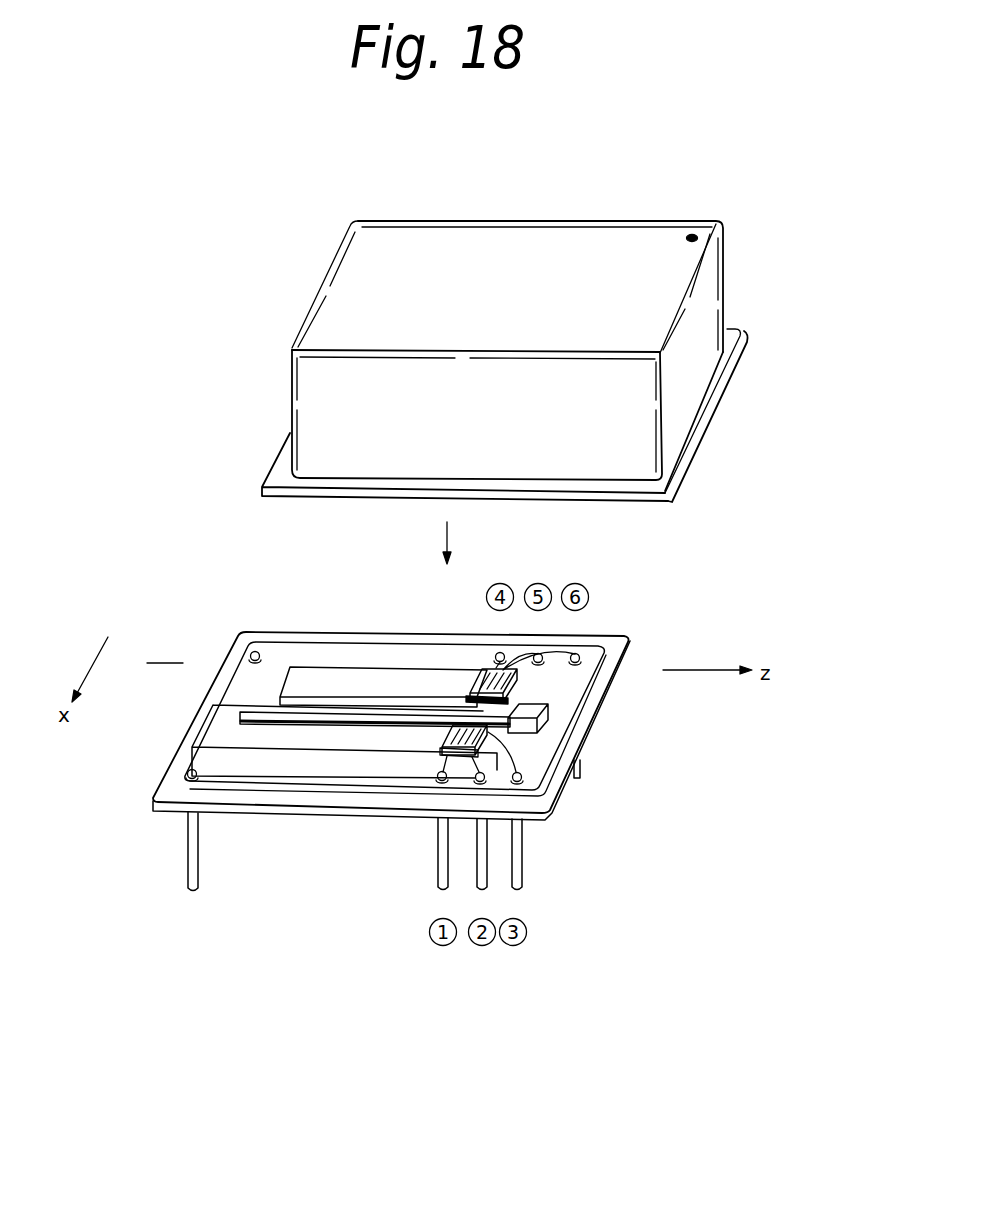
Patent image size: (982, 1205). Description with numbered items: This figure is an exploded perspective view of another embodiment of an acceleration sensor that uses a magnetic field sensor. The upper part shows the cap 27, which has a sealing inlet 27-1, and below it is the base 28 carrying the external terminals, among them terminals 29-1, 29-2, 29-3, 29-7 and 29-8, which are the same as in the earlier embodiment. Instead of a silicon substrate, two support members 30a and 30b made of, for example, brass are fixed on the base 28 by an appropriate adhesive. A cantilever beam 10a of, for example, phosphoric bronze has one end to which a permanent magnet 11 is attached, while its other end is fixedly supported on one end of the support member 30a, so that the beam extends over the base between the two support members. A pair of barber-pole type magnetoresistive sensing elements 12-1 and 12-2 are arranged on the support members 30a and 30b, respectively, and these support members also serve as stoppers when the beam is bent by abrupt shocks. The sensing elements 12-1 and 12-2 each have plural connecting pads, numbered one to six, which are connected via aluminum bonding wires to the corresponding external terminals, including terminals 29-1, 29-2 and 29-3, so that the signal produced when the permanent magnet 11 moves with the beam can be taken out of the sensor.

The cap 27 is at (596, 232).
The sealing inlet 27-1 is at (698, 235).
The base 28 is at (155, 798).
The terminal 29-1 is at (437, 873).
The terminal 29-2 is at (472, 877).
The terminal 29-3 is at (522, 875).
The terminal 29-7 is at (187, 873).
The terminal 29-8 is at (258, 650).
The support member 30a is at (305, 763).
The support member 30b is at (345, 675).
The magnetic substrate 10a is at (388, 715).
The permanent magnet 11 is at (548, 706).
The barber-pole type magnetoresistive sensing element 12-1 is at (522, 752).
The barber-pole type magnetoresistive sensing element 12-2 is at (492, 730).